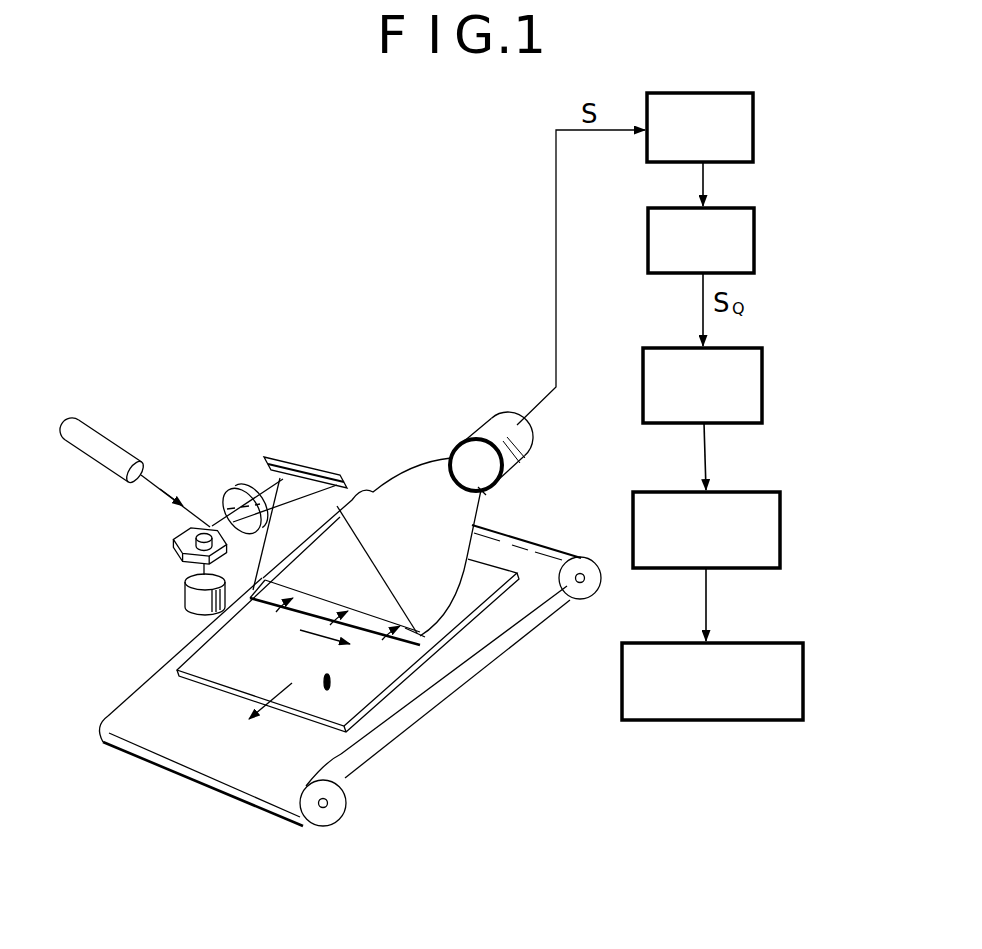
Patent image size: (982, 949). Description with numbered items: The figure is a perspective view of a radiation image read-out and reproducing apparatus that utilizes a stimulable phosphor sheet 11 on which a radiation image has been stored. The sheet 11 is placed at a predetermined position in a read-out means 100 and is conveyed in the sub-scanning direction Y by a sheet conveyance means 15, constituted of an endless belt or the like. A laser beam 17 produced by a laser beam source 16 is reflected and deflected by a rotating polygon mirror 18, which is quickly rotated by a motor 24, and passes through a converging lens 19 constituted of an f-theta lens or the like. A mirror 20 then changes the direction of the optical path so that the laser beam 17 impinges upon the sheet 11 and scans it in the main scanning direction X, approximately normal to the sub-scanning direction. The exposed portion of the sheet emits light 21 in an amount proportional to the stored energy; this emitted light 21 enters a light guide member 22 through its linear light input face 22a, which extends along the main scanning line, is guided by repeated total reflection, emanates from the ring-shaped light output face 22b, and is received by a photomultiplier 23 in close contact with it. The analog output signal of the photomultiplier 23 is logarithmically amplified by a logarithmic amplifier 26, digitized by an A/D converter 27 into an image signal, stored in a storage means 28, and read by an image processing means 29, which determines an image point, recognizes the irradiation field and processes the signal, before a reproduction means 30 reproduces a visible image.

The stimulable phosphor sheet 11 is at (363, 692).
The sheet conveyance means 15 is at (343, 753).
The laser beam source 16 is at (118, 445).
The laser beam 17 is at (163, 492).
The rotating polygon mirror 18 is at (175, 540).
The converging lens 19 is at (237, 488).
The mirror 20 is at (306, 468).
The emitted light 21 is at (287, 607).
The light guide member 22 is at (420, 503).
The light input face 22a is at (417, 634).
The light output face 22b is at (490, 500).
The photomultiplier 23 is at (492, 432).
The motor 24 is at (185, 594).
The logarithmic amplifier 26 is at (753, 147).
The A/D converter 27 is at (755, 248).
The storage means 28 is at (762, 392).
The image processing means 29 is at (781, 537).
The reproduction means 30 is at (803, 678).
The read-out means 100 is at (292, 427).